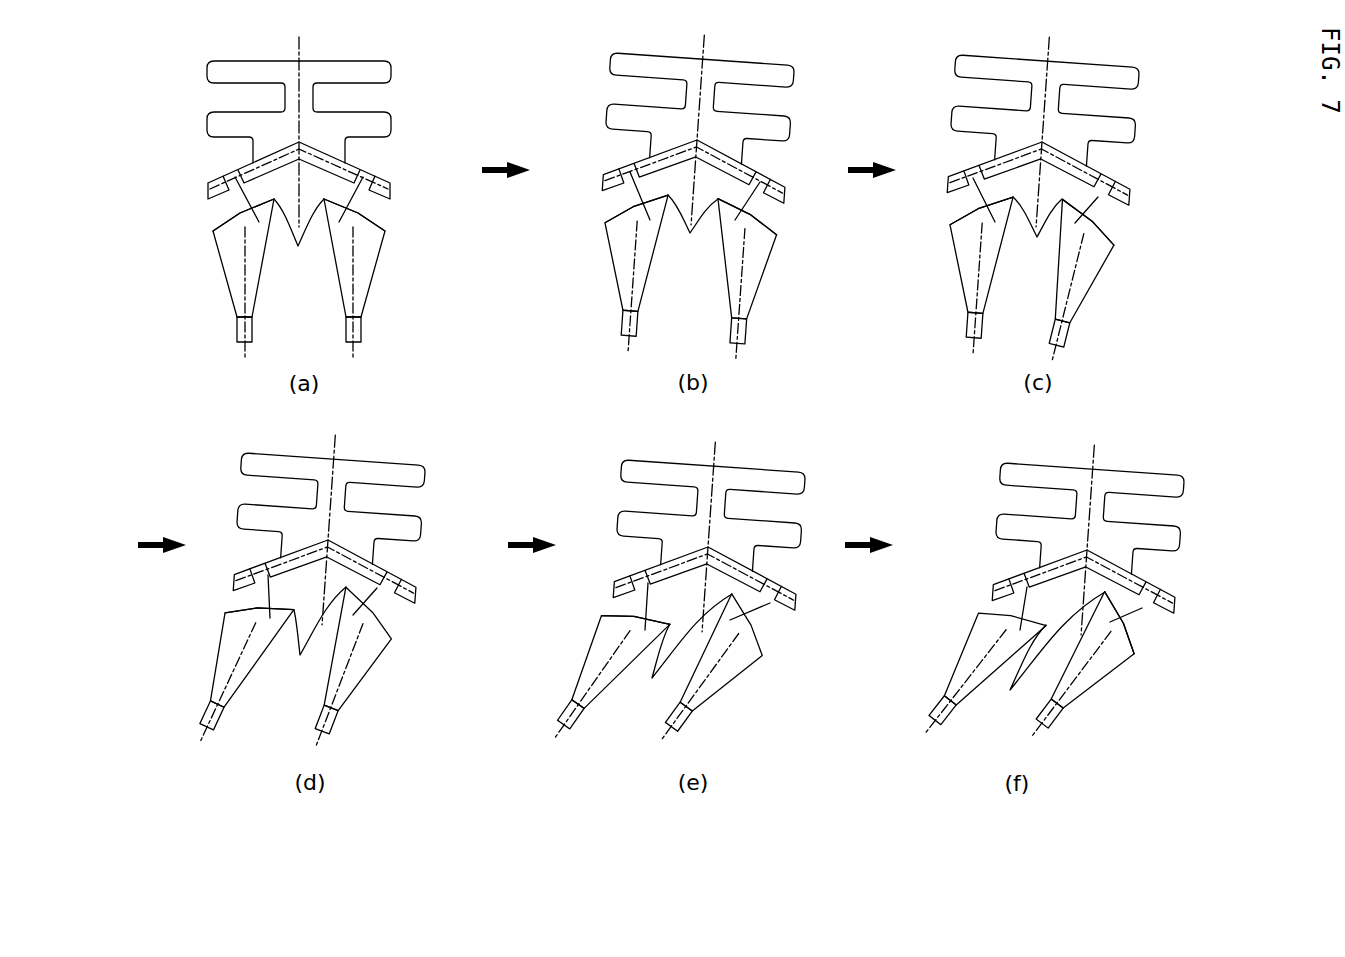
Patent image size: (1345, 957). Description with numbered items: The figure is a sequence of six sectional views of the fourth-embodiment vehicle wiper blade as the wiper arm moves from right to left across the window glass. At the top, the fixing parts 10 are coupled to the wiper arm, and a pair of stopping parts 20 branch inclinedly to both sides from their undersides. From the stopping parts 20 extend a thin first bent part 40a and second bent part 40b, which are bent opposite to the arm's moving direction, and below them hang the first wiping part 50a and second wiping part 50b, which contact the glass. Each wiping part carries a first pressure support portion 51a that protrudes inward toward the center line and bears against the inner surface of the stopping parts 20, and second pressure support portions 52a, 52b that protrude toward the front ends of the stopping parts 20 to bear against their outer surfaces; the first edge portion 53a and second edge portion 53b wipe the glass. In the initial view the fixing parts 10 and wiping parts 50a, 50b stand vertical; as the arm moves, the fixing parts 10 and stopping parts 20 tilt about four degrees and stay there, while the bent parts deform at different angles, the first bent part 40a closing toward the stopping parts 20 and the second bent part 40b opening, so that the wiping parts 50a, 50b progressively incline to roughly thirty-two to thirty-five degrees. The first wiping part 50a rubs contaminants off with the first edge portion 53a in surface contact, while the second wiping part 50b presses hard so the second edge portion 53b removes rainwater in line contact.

The fixing parts 10 is at (402, 98).
The stopping parts 20 is at (393, 197).
The first bent part 40a is at (365, 207).
The second bent part 40b is at (237, 210).
The first wiping part 50a is at (380, 268).
The second wiping part 50b is at (222, 277).
The first pressure support portion 51a is at (689, 463).
The second pressure support portion of the first wiping part 52a is at (380, 235).
The second pressure support portion of the second wiping part 52b is at (222, 238).
The first edge portion 53a is at (358, 333).
The second edge portion 53b is at (240, 333).